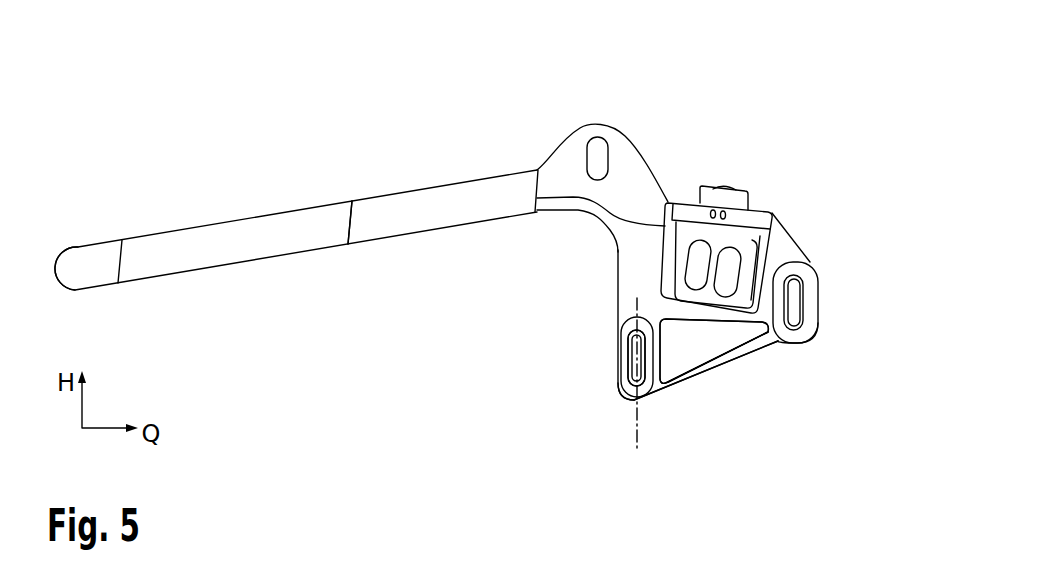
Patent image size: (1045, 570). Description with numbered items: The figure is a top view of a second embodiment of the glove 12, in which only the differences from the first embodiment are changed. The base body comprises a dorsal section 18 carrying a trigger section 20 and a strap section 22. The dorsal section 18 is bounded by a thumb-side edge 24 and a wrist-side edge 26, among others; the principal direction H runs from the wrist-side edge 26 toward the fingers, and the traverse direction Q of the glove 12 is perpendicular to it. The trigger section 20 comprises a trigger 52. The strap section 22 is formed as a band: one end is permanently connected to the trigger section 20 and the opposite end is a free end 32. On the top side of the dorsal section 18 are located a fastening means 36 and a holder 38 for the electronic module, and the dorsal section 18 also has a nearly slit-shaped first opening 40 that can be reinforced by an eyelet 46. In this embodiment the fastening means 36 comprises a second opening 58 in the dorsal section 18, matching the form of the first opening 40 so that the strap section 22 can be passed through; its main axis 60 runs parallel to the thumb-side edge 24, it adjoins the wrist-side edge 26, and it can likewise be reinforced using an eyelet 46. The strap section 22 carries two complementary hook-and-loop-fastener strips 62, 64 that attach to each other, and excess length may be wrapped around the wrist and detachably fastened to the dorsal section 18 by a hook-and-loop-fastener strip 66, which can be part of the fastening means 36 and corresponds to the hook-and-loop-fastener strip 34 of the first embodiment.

The glove 12 is at (155, 91).
The dorsal section 18 is at (790, 224).
The trigger section 20 is at (622, 173).
The strap section 22 is at (203, 237).
The thumb-side edge 24 is at (598, 265).
The wrist-side edge 26 is at (701, 410).
The free end 32 is at (57, 238).
The hook-and-loop-fastener strip 34 is at (770, 376).
The fastening means 36 is at (699, 369).
The holder 38 is at (693, 212).
The first opening 40 is at (793, 288).
The eyelet 46 is at (800, 323).
The trigger 52 is at (597, 150).
The second opening 58 is at (634, 375).
The main axis 60 is at (621, 313).
The hook-and-loop-fastener strip 62 is at (306, 215).
The hook-and-loop-fastener strip 64 is at (427, 208).
The hook-and-loop-fastener strip 66 is at (700, 353).